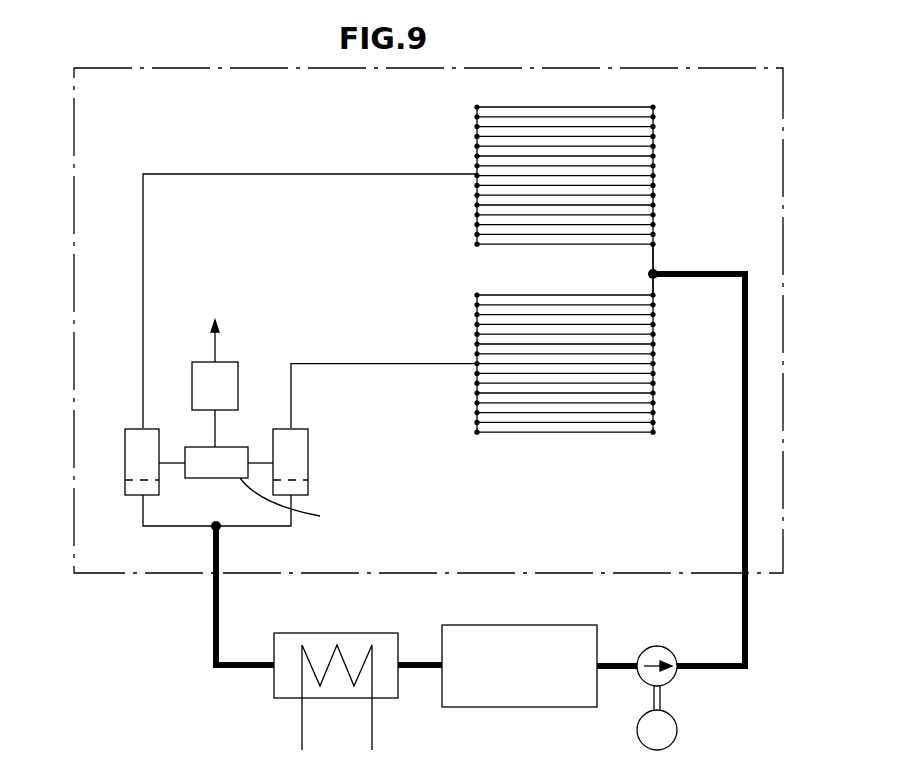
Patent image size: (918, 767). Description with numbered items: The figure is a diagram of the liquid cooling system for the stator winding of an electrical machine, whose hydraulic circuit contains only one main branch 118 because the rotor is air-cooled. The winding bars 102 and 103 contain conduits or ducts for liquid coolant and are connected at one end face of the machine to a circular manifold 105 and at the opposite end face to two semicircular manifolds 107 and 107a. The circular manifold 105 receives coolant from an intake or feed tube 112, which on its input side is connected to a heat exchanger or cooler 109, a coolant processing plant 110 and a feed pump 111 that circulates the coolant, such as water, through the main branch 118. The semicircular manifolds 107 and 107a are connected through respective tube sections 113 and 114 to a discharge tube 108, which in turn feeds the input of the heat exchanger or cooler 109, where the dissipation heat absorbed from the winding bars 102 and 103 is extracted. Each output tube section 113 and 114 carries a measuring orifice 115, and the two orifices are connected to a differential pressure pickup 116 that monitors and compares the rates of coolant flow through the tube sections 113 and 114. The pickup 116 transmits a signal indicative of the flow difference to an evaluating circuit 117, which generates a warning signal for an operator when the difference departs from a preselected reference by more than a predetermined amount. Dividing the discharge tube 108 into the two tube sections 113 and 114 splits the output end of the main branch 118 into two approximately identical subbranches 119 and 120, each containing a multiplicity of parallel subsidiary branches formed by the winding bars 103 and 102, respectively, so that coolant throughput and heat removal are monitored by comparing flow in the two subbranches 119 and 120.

The winding bars 102 is at (545, 116).
The winding bars 103 is at (565, 386).
The circular manifold 105 is at (655, 132).
The semicircular manifold 107 is at (476, 136).
The semicircular manifold 107a is at (476, 404).
The discharge tube 108 is at (213, 617).
The heat exchanger or cooler 109 is at (350, 642).
The coolant processing plant 110 is at (567, 703).
The feed pump 111 is at (655, 647).
The intake or feed tube 112 is at (749, 660).
The tube section 113 is at (159, 529).
The tube section 114 is at (256, 529).
The measuring orifice 115 is at (125, 463).
The differential pressure pickup 116 is at (197, 472).
The evaluating circuit 117 is at (224, 308).
The main branch 118 is at (784, 452).
The subbranch 119 is at (339, 359).
The subbranch 120 is at (271, 161).